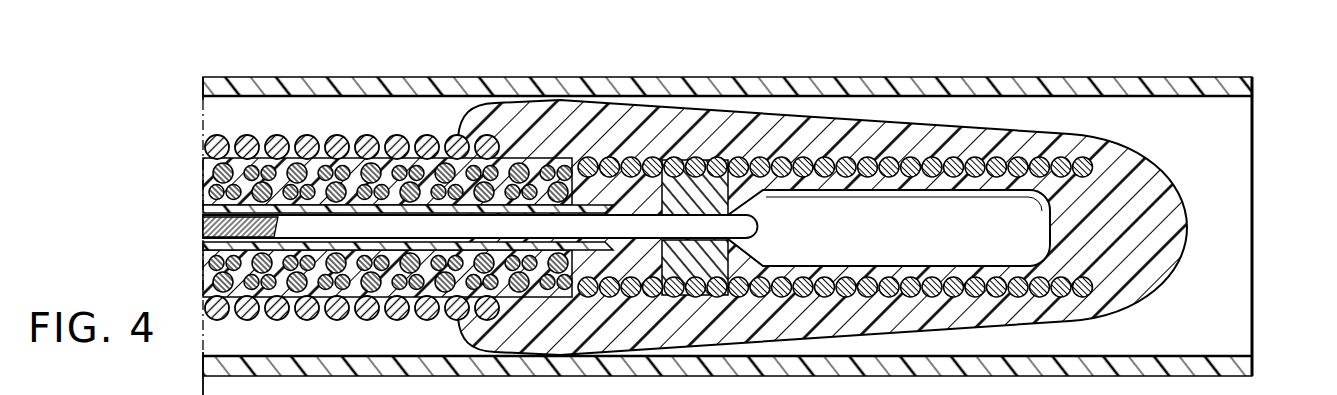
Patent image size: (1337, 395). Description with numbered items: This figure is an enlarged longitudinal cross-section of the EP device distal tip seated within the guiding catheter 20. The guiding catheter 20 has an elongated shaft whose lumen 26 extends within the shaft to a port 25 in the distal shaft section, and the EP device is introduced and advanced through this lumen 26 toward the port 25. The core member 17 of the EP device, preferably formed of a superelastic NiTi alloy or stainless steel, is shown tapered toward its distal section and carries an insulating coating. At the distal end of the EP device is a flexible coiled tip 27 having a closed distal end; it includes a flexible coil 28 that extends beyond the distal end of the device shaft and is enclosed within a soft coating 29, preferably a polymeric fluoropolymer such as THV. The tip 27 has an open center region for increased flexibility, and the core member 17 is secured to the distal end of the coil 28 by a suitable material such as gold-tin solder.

The core member 17 is at (303, 224).
The guiding catheter 20 is at (1097, 77).
The port 25 is at (1253, 262).
The lumen 26 is at (1168, 110).
The flexible coiled tip 27 is at (770, 115).
The flexible coil 28 is at (890, 157).
The soft coating 29 is at (967, 137).